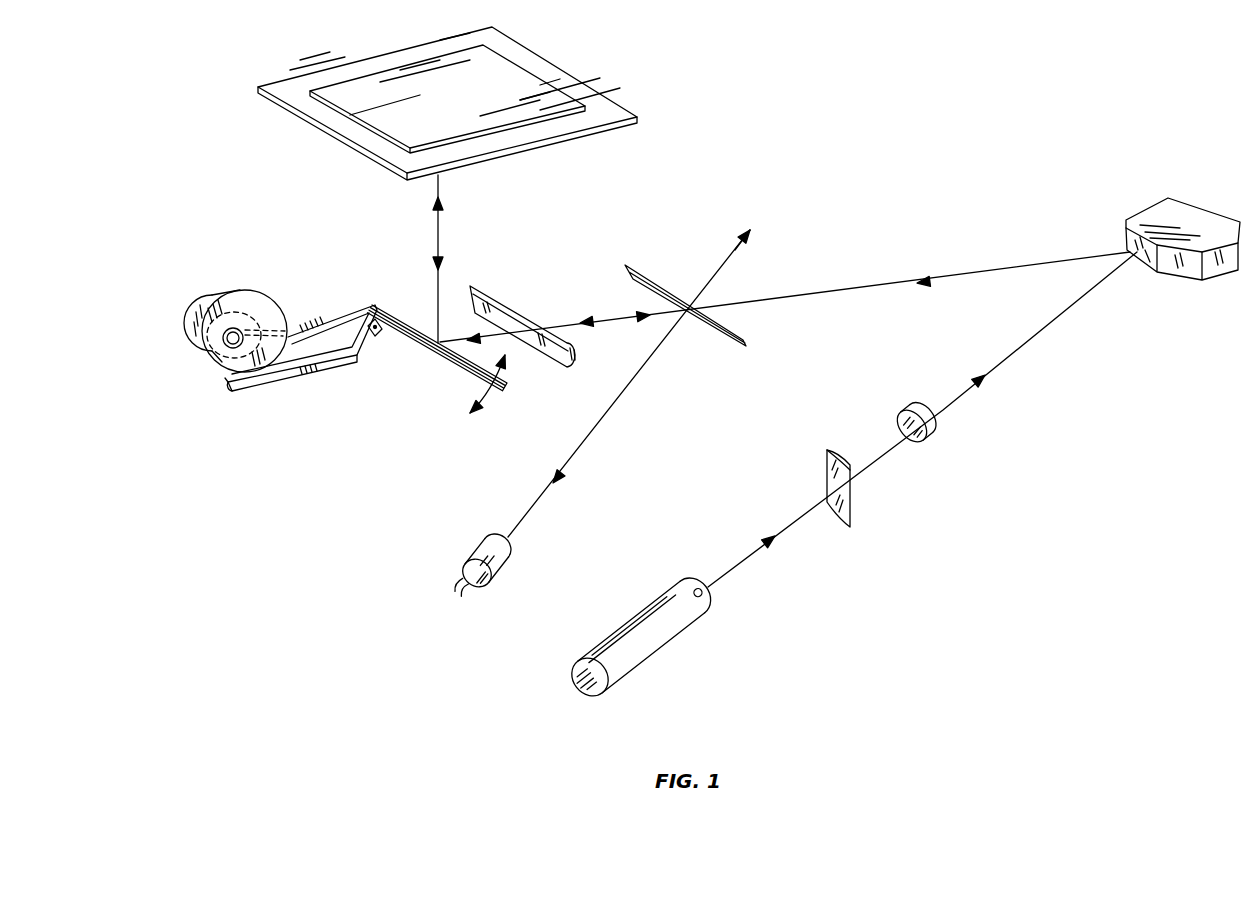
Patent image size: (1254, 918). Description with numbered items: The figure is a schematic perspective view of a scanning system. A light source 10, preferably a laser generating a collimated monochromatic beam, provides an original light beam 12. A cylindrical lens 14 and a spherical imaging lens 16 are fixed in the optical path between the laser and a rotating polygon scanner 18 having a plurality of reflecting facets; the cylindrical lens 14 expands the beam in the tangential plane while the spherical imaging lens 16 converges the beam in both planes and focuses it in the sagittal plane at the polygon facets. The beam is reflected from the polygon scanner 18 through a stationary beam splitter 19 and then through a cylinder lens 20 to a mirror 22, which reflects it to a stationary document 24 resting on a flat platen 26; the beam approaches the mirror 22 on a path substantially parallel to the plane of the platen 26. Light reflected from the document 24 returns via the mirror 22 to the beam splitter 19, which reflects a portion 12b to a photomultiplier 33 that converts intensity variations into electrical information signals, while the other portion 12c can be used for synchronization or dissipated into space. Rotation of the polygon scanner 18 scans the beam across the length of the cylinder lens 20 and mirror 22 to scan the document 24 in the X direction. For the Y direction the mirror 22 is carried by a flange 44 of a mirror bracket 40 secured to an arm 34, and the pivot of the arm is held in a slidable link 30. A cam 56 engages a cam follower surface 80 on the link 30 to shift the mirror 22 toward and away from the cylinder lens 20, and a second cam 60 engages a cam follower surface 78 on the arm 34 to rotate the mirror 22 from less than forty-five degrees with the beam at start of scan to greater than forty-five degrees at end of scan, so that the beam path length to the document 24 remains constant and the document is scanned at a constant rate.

The light source 10 is at (675, 637).
The original light beam 12 is at (790, 528).
The reflected beam portion 12b is at (647, 375).
The other beam portion 12c is at (740, 252).
The cylindrical lens 14 is at (852, 517).
The spherical imaging lens 16 is at (950, 422).
The rotating polygon scanner 18 is at (1130, 213).
The stationary beam splitter 19 is at (658, 280).
The cylinder lens 20 is at (503, 305).
The mirror 22 is at (420, 300).
The document 24 is at (570, 100).
The platen 26 is at (623, 120).
The slidable link 30 is at (340, 312).
The photomultiplier 33 is at (512, 558).
The arm 34 is at (350, 362).
The mirror bracket 40 is at (378, 337).
The flange 44 is at (433, 357).
The cam 56 is at (190, 320).
The second cam 60 is at (265, 302).
The cam follower surface 78 is at (222, 377).
The cam follower surface 80 is at (285, 308).